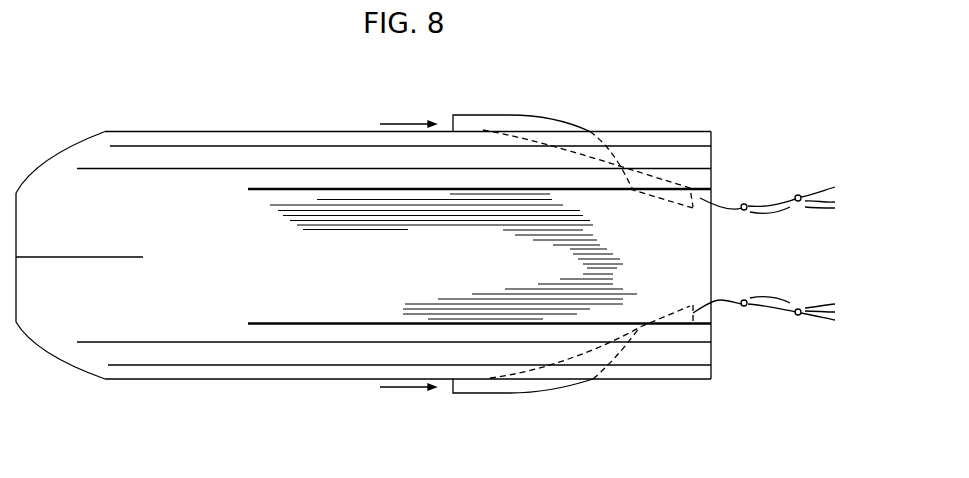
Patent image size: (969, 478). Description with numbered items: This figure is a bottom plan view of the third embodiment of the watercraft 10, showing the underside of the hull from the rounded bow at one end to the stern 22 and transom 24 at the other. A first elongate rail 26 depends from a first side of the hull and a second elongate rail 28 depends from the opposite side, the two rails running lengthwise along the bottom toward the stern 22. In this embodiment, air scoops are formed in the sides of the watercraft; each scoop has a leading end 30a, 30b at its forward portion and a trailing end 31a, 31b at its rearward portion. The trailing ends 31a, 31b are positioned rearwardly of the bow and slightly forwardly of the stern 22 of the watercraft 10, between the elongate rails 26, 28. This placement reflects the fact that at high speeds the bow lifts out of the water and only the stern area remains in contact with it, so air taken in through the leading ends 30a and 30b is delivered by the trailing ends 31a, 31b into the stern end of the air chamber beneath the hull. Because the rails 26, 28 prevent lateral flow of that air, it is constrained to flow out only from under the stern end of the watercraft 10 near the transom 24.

The watercraft 10 is at (198, 62).
The stern 22 is at (668, 131).
The transom 24 is at (711, 262).
The first elongate rail 26 is at (290, 322).
The second elongate rail 28 is at (263, 190).
The leading end of air scoop 30a is at (483, 393).
The leading end of air scoop 30b is at (486, 115).
The trailing end of air scoop 31a is at (693, 305).
The trailing end of air scoop 31b is at (633, 190).